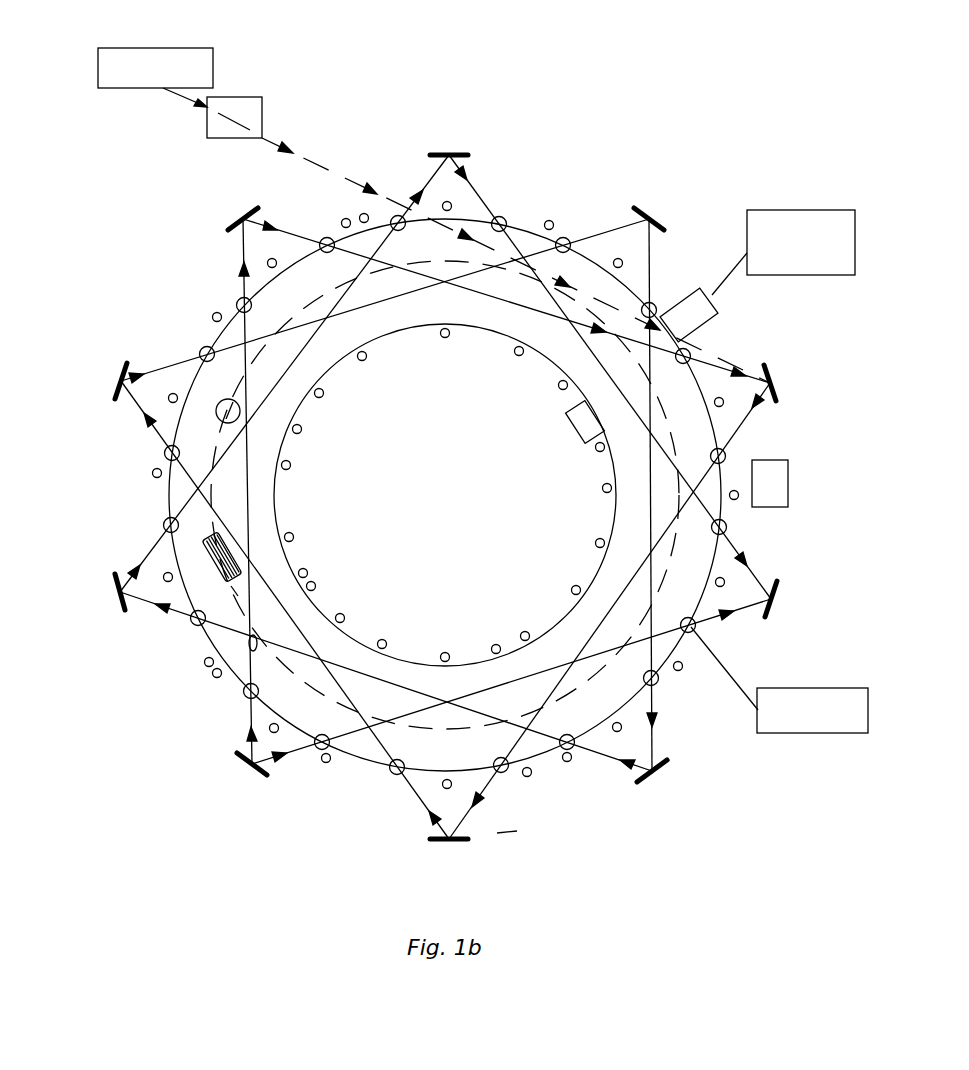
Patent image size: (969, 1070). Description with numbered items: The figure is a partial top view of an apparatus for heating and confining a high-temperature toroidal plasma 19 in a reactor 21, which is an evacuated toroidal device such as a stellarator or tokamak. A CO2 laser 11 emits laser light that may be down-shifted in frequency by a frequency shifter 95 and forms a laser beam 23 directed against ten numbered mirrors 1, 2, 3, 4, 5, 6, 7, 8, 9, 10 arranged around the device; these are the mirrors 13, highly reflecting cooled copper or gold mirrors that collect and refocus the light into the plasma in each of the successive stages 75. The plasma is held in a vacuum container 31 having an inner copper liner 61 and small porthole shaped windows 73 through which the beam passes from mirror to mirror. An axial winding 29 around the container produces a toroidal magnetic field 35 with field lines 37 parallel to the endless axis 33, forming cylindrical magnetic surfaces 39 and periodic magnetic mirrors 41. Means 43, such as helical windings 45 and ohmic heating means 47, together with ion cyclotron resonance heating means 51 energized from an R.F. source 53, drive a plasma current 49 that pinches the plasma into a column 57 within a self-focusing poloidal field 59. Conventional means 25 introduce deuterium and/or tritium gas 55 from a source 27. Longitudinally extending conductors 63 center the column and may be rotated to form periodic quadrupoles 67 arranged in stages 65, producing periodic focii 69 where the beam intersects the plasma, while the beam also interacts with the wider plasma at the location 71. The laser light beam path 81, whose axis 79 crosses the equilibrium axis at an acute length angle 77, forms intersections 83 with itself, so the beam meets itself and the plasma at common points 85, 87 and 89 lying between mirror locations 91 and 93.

The mirror 1 is at (449, 138).
The mirror 2 is at (652, 214).
The mirror 3 is at (781, 383).
The mirror 4 is at (783, 602).
The mirror 5 is at (652, 780).
The mirror 6 is at (449, 857).
The mirror 7 is at (246, 774).
The mirror 8 is at (110, 593).
The mirror 9 is at (110, 381).
The mirror 10 is at (236, 210).
The CO2 laser 11 is at (213, 62).
The frequency shifter 95 is at (250, 97).
The laser beam 23 is at (268, 138).
The mirrors 13 is at (484, 131).
The inner copper liner 61 is at (508, 210).
The stages 75 is at (668, 181).
The acute length angle 77 is at (705, 181).
The R.F. source 53 is at (838, 210).
The ion cyclotron resonance heating means 51 is at (666, 300).
The endless axis 33 is at (688, 347).
The axial winding 29 is at (171, 321).
The self-focusing poloidal field 59 is at (215, 398).
The plasma 19 is at (213, 477).
The porthole shaped windows 73 is at (155, 527).
The field lines 37 is at (213, 522).
The cylindrical magnetic surfaces 39 is at (194, 579).
The plasma current 49 is at (234, 579).
The toroidal magnetic field 35 is at (230, 588).
The intersections 83 is at (238, 600).
The common point 85 is at (250, 636).
The reactor 21 is at (176, 692).
The magnetic mirrors 41 is at (308, 573).
The source 27 is at (316, 589).
The axis of the laser light beam path 79 is at (617, 598).
The ohmic heating means 47 is at (809, 486).
The means 43 is at (798, 490).
The conventional means 25 is at (754, 668).
The deuterium and/or tritium gas 55 is at (735, 682).
The helical windings 45 is at (568, 762).
The periodic quadrupoles 67 is at (592, 823).
The stages 65 is at (550, 828).
The longitudinally extending conductors 63 is at (513, 837).
The laser light beam path 81 is at (425, 797).
The plasma column 57 is at (398, 774).
The vacuum container 31 is at (357, 763).
The periodic focii 69 is at (313, 762).
The location 71 is at (318, 833).
The mirror location 91 is at (235, 852).
The mirror location 93 is at (297, 870).
The common point 87 is at (447, 702).
The common point 89 is at (530, 730).